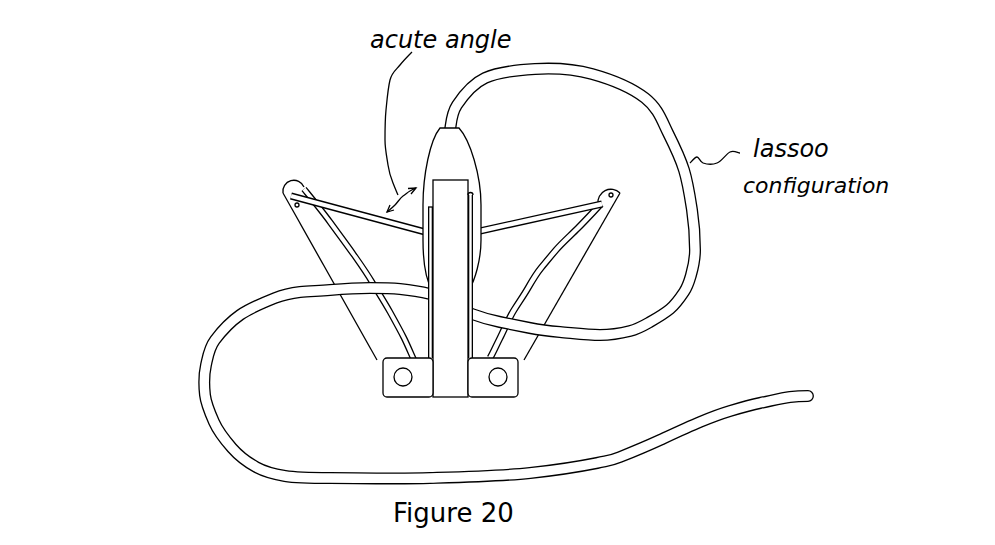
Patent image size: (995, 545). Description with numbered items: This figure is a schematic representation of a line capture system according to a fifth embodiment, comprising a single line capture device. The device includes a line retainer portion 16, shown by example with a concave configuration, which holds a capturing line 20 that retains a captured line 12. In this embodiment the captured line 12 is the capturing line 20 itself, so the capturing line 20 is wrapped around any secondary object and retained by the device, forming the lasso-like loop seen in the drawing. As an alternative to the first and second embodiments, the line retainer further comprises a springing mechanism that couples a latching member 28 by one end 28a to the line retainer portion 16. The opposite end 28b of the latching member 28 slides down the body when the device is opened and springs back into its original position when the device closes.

The suture loop in lasso configuration 12 is at (442, 274).
The suture loop in lasso configuration 20 is at (200, 402).
The arm 16 is at (310, 243).
The wire 28 is at (368, 213).
The wire portion along shaft 28a is at (478, 280).
The wire portion to arm tip 28b is at (508, 218).